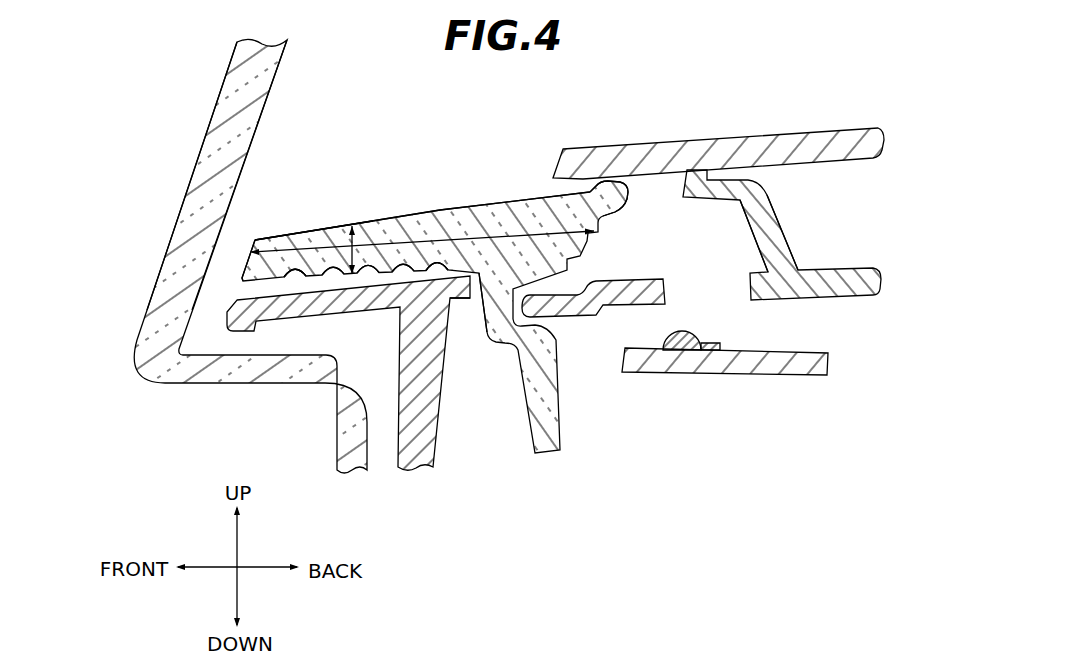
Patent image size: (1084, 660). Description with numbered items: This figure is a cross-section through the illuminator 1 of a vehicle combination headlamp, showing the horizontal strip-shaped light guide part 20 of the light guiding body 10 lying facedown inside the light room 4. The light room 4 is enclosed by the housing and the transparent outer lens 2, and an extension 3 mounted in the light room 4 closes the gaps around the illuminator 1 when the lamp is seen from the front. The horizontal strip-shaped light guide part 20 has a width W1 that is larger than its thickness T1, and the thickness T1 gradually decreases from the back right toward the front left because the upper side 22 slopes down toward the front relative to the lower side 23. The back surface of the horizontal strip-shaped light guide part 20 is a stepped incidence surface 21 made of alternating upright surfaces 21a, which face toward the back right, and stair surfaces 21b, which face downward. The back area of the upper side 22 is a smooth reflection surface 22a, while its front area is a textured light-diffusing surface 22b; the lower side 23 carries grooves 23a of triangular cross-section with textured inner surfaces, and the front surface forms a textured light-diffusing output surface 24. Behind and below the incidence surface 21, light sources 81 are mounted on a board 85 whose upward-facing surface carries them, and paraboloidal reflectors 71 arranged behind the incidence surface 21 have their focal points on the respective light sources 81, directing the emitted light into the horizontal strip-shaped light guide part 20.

The illuminator 1 is at (632, 397).
The outer lens 2 is at (158, 380).
The extension 3 is at (413, 455).
The light room 4 is at (285, 98).
The light guiding body 10 is at (235, 280).
The horizontal strip-shaped light guide part 20 is at (420, 256).
The incidence surface 21 is at (845, 165).
The upright surface 21a is at (567, 266).
The stair surface 21b is at (582, 252).
The upper side 22 is at (495, 156).
The reflection surface 22a is at (590, 186).
The light-diffusing surface 22b is at (373, 215).
The lower side 23 is at (314, 274).
The groove 23a is at (281, 272).
The output surface 24 is at (245, 267).
The reflector 71 is at (773, 258).
The light source 81 is at (684, 331).
The board 85 is at (767, 362).
The thickness T1 is at (356, 276).
The width W1 is at (463, 285).